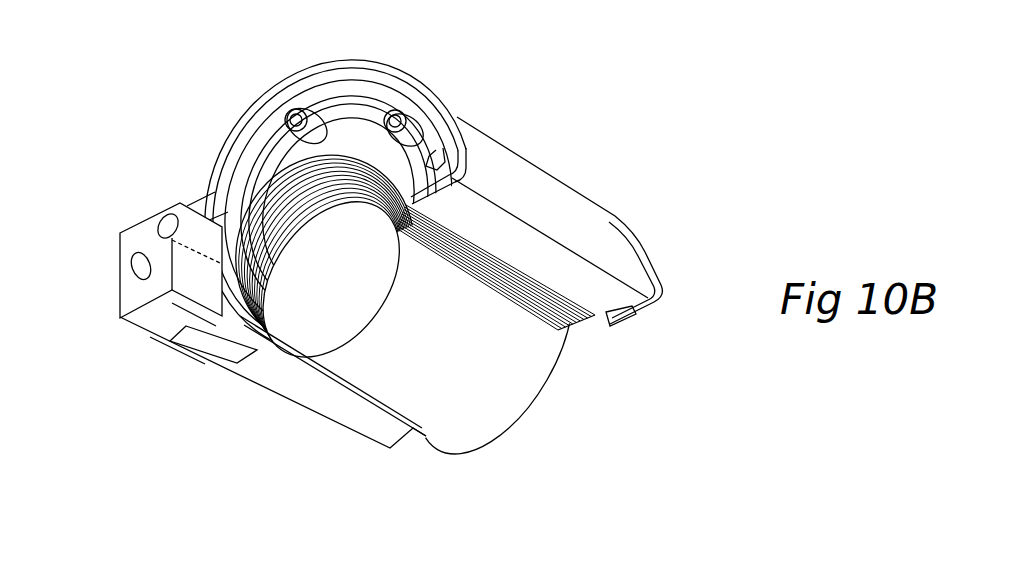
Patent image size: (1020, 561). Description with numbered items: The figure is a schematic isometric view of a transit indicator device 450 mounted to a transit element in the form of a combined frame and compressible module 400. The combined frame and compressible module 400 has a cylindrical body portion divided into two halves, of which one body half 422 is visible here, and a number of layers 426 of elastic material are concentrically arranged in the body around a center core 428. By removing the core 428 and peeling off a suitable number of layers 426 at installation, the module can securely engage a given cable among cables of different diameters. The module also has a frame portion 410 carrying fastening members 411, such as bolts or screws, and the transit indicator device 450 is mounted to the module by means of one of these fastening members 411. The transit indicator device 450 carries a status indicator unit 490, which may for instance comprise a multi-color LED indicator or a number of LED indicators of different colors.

The combined frame and compressible module 400 is at (566, 148).
The frame portion 410 is at (234, 174).
The fastening members 411 is at (384, 120).
The body half 422 is at (620, 236).
The layers of elastic material 426 is at (572, 321).
The center core 428 is at (523, 378).
The transit indicator device 450 is at (124, 283).
The status indicator unit 490 is at (141, 268).